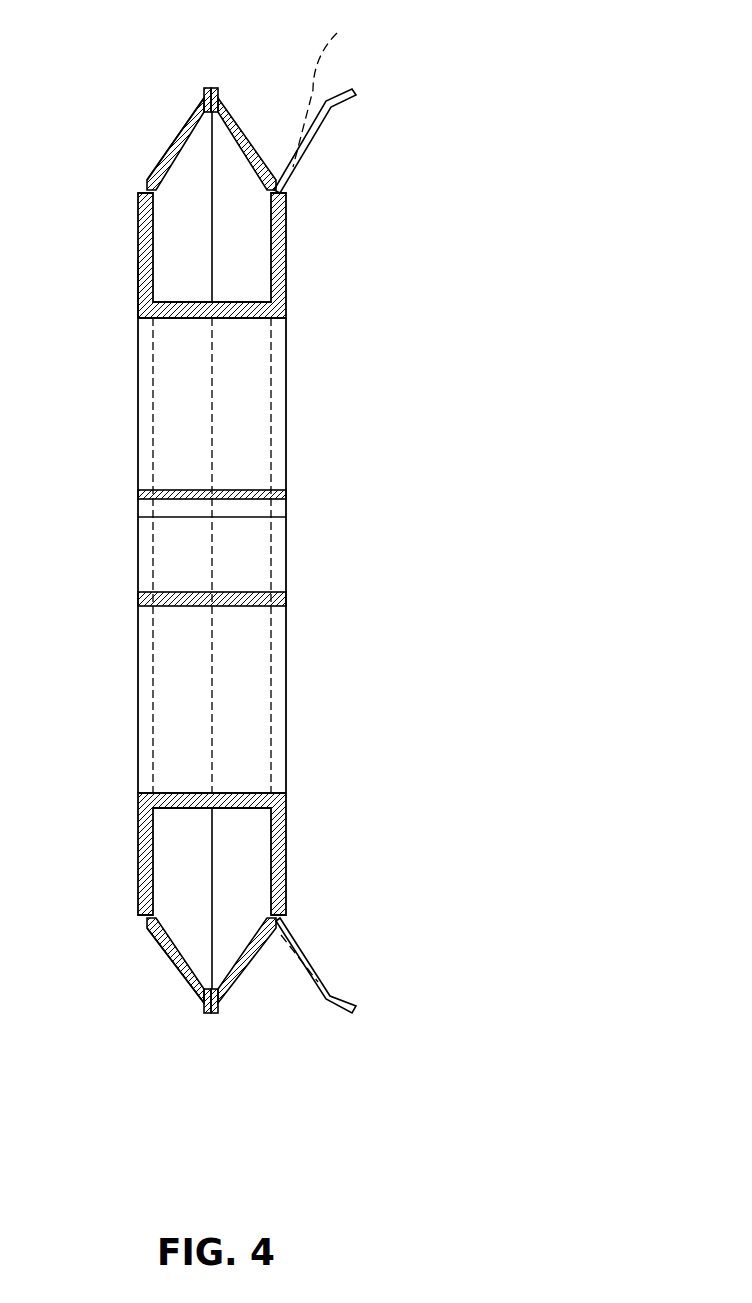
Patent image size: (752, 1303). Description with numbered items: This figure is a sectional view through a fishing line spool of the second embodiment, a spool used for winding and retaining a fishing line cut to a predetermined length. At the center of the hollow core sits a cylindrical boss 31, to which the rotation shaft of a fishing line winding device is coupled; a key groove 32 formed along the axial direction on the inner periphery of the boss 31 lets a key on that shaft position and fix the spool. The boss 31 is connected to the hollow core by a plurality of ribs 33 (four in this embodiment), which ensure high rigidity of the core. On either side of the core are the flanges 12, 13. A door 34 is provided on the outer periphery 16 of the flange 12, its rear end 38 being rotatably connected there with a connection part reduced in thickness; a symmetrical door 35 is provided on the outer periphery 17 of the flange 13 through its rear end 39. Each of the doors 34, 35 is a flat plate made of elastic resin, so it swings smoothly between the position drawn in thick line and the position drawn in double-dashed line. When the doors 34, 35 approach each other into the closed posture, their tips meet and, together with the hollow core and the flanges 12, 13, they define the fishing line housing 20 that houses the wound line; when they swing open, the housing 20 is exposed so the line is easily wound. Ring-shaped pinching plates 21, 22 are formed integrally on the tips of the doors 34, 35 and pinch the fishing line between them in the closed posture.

The flange 12 is at (287, 280).
The flange 13 is at (138, 288).
The outer periphery of the flange 16 is at (288, 182).
The outer periphery of the flange 17 is at (147, 188).
The fishing line housing 20 is at (250, 452).
The pinching plate 21 is at (218, 100).
The pinching plate 22 is at (203, 100).
The boss 31 is at (243, 590).
The key groove 32 is at (257, 508).
The rib 33 is at (257, 397).
The door 34 is at (288, 1007).
The door 35 is at (183, 133).
The rear end of the door 38 is at (262, 163).
The rear end of the door 39 is at (163, 160).